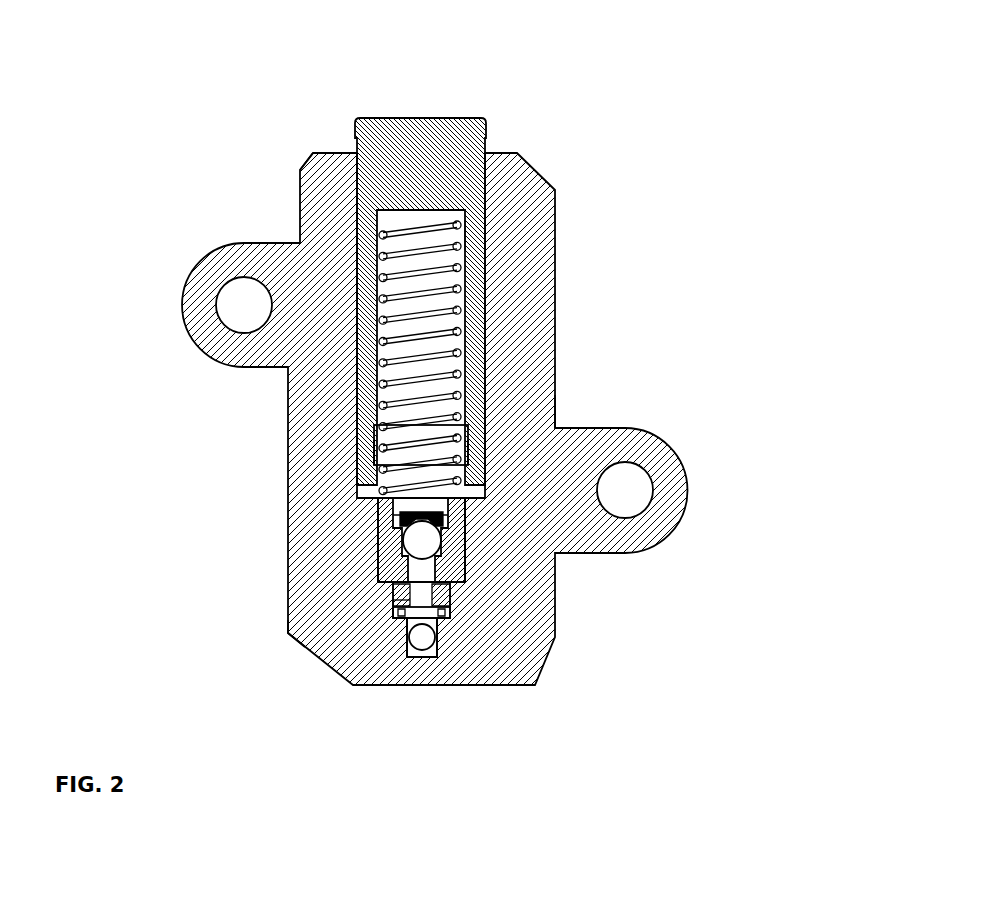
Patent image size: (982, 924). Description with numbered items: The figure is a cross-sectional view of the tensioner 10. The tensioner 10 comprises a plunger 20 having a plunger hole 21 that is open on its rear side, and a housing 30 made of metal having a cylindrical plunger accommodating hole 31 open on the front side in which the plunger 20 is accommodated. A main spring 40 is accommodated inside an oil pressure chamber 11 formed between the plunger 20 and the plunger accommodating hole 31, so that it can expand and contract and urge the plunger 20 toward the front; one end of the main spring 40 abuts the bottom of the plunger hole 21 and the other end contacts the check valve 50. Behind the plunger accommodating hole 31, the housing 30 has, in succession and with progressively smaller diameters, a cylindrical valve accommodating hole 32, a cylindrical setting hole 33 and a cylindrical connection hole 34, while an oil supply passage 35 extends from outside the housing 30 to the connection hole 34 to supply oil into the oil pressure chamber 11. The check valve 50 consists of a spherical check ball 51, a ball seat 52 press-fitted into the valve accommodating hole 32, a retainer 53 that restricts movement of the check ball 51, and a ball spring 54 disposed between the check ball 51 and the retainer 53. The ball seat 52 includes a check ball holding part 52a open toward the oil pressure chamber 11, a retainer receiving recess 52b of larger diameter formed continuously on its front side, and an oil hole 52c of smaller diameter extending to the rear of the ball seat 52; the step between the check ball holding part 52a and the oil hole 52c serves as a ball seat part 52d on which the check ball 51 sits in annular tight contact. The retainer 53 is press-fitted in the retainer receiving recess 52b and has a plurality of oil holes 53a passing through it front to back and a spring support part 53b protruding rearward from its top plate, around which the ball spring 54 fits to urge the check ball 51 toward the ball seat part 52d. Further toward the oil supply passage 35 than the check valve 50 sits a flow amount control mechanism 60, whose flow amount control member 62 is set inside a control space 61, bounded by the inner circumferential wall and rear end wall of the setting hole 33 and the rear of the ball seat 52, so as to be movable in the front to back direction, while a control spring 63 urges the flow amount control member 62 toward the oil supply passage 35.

The tensioner 10 is at (222, 116).
The plunger 20 is at (432, 118).
The plunger hole 21 is at (377, 222).
The main spring 40 is at (465, 237).
The housing 30 is at (523, 263).
The plunger accommodating hole 31 is at (555, 412).
The oil pressure chamber 11 is at (398, 340).
The spring support part 53b is at (372, 450).
The oil holes 53a is at (462, 490).
The check valve 50 is at (461, 569).
The retainer 53 is at (360, 483).
The ball spring 54 is at (397, 513).
The check ball 51 is at (404, 545).
The ball seat 52 is at (385, 566).
The retainer receiving recess 52b is at (445, 521).
The check ball holding part 52a is at (467, 547).
The valve accommodating hole 32 is at (467, 562).
The setting hole 33 is at (470, 603).
The ball seat part 52d is at (310, 645).
The oil hole 52c is at (393, 612).
The connection hole 34 is at (407, 660).
The oil supply passage 35 is at (418, 644).
The control space 61 is at (428, 620).
The flow amount control member 62 is at (440, 606).
The control spring 63 is at (455, 600).
The flow amount control mechanism 60 is at (454, 682).